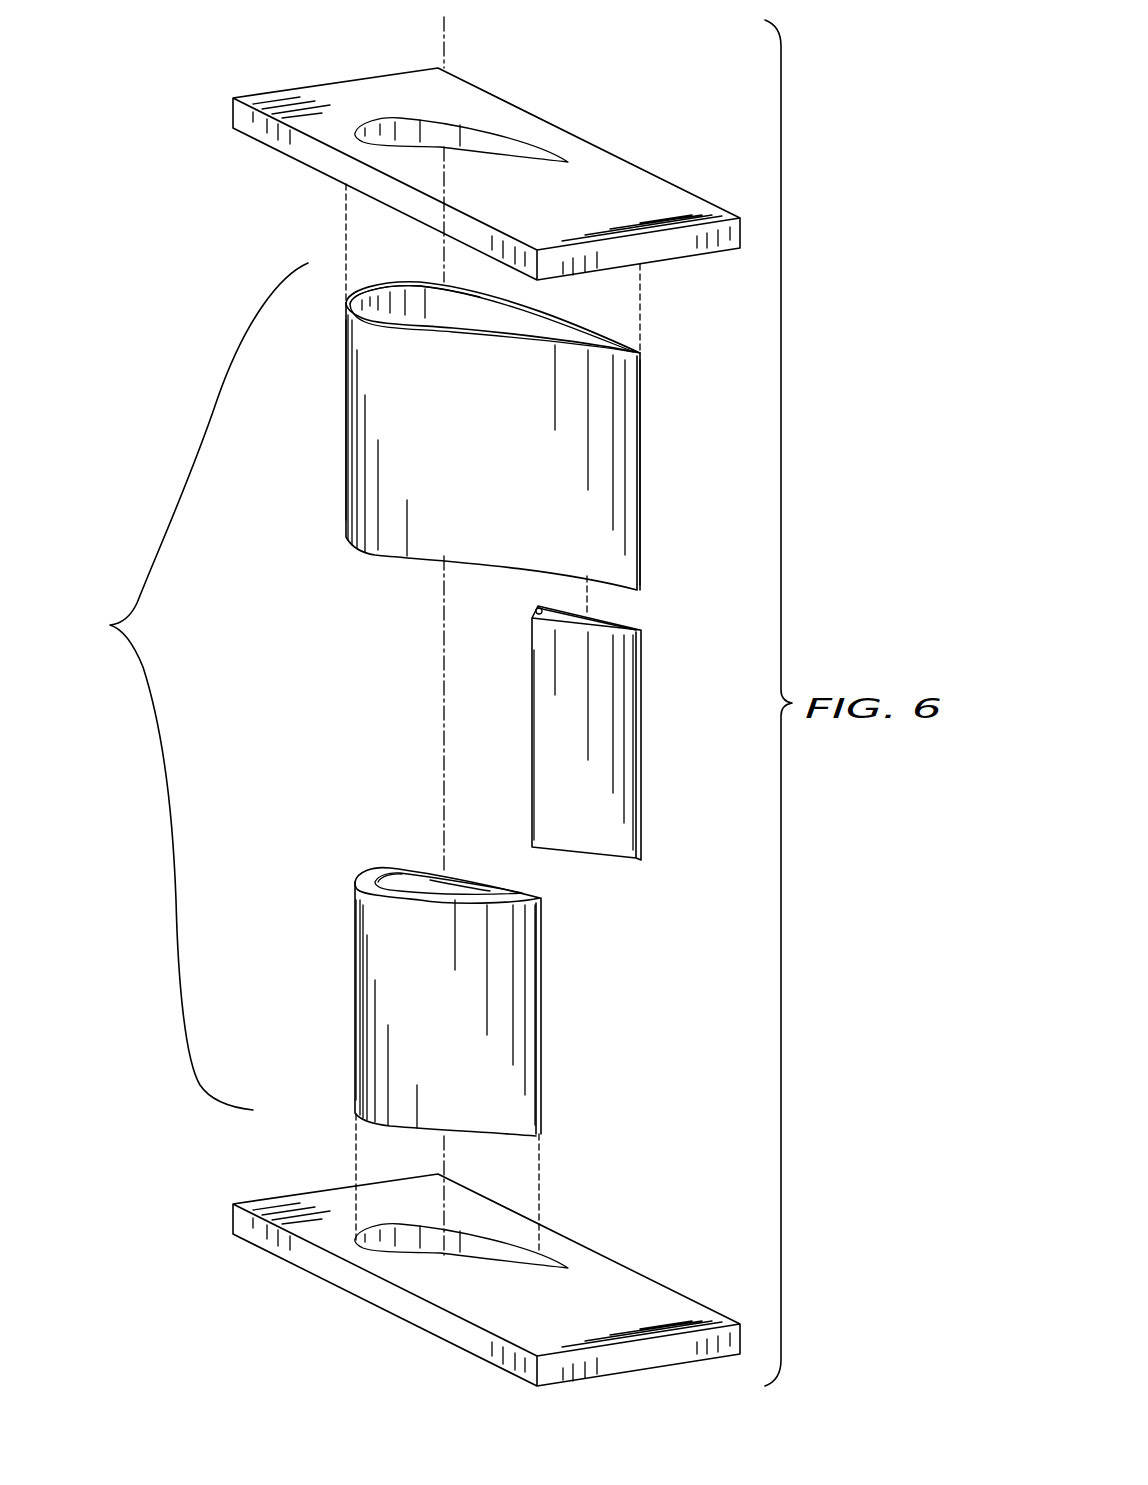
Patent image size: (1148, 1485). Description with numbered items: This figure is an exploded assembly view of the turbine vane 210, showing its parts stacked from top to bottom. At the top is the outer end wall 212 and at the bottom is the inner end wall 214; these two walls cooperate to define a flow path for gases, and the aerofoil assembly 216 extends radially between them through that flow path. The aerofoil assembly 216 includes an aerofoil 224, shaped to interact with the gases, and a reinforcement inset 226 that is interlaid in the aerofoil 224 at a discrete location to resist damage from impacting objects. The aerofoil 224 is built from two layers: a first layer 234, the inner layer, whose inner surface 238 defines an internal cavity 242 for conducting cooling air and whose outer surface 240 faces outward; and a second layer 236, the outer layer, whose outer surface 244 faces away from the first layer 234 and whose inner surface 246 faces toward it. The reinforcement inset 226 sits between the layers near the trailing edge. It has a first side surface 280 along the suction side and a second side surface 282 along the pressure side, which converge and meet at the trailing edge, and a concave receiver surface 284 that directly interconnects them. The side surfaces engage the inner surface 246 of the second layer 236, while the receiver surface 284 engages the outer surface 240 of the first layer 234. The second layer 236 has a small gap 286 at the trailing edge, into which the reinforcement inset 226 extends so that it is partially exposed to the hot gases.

The vane 210 is at (644, 110).
The outer end wall 212 is at (280, 82).
The inner end wall 214 is at (224, 1192).
The aerofoil assembly 216 is at (184, 686).
The aerofoil 224 is at (247, 757).
The reinforcement inset 226 is at (678, 704).
The first layer 234 is at (334, 858).
The second layer 236 is at (362, 563).
The inner surface 238 is at (408, 880).
The outer surface 240 is at (372, 970).
The internal cavity 242 is at (453, 862).
The outer surface 244 is at (365, 387).
The inner surface 246 is at (407, 298).
The first side surface 280 is at (610, 620).
The second side surface 282 is at (628, 738).
The receiver surface 284 is at (538, 610).
The gap 286 is at (650, 440).